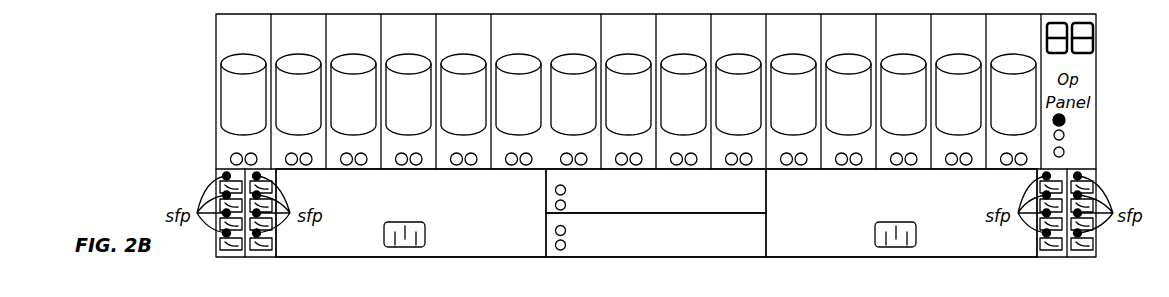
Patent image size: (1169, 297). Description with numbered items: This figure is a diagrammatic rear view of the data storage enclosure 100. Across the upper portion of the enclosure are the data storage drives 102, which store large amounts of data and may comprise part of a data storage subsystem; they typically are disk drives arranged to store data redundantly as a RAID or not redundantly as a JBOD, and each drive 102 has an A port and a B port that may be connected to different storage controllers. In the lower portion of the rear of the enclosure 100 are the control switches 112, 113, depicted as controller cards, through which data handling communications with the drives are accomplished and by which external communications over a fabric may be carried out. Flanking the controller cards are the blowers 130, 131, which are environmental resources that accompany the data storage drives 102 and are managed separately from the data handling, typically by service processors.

The data storage enclosure 100 is at (216, 40).
The data storage drives 102 is at (354, 54).
The control switch 112 is at (748, 200).
The control switch 113 is at (655, 257).
The blower 130 is at (960, 257).
The blower 131 is at (472, 257).